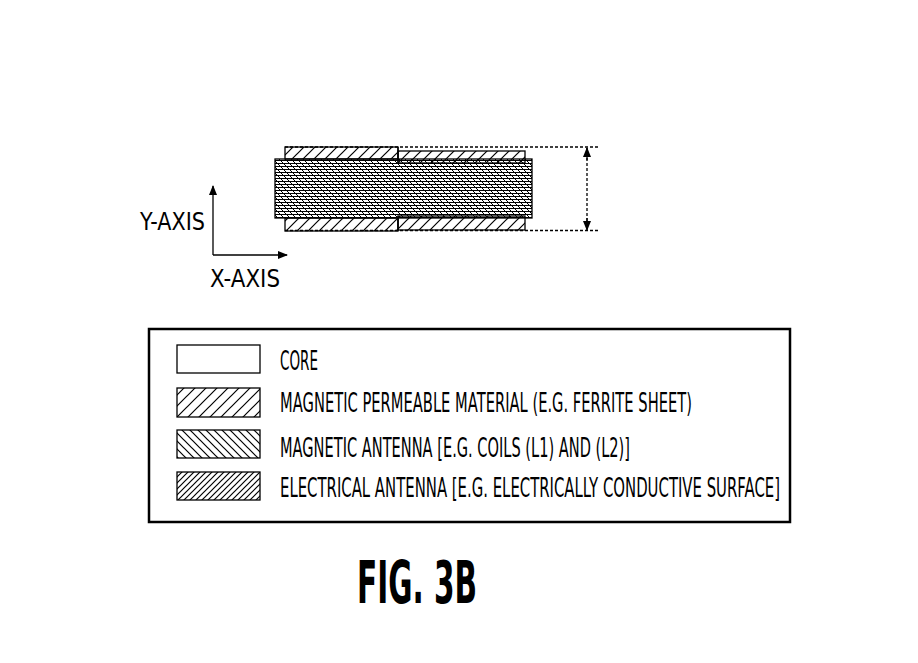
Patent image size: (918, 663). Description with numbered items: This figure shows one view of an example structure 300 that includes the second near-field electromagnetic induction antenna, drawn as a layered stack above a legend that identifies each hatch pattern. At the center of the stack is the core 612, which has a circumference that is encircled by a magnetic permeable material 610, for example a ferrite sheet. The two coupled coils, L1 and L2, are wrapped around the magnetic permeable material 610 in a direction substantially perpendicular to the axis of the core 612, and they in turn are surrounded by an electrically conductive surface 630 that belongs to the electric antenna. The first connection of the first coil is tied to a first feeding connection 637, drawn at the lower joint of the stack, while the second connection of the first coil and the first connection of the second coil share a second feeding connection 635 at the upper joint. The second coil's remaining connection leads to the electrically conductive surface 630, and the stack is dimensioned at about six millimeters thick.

The example structure 300 is at (260, 72).
The magnetic permeable material 610 is at (466, 150).
The core 612 is at (177, 358).
The electrically conductive surface 630 is at (177, 488).
The second feeding connection 635 is at (399, 157).
The first feeding connection 637 is at (400, 228).